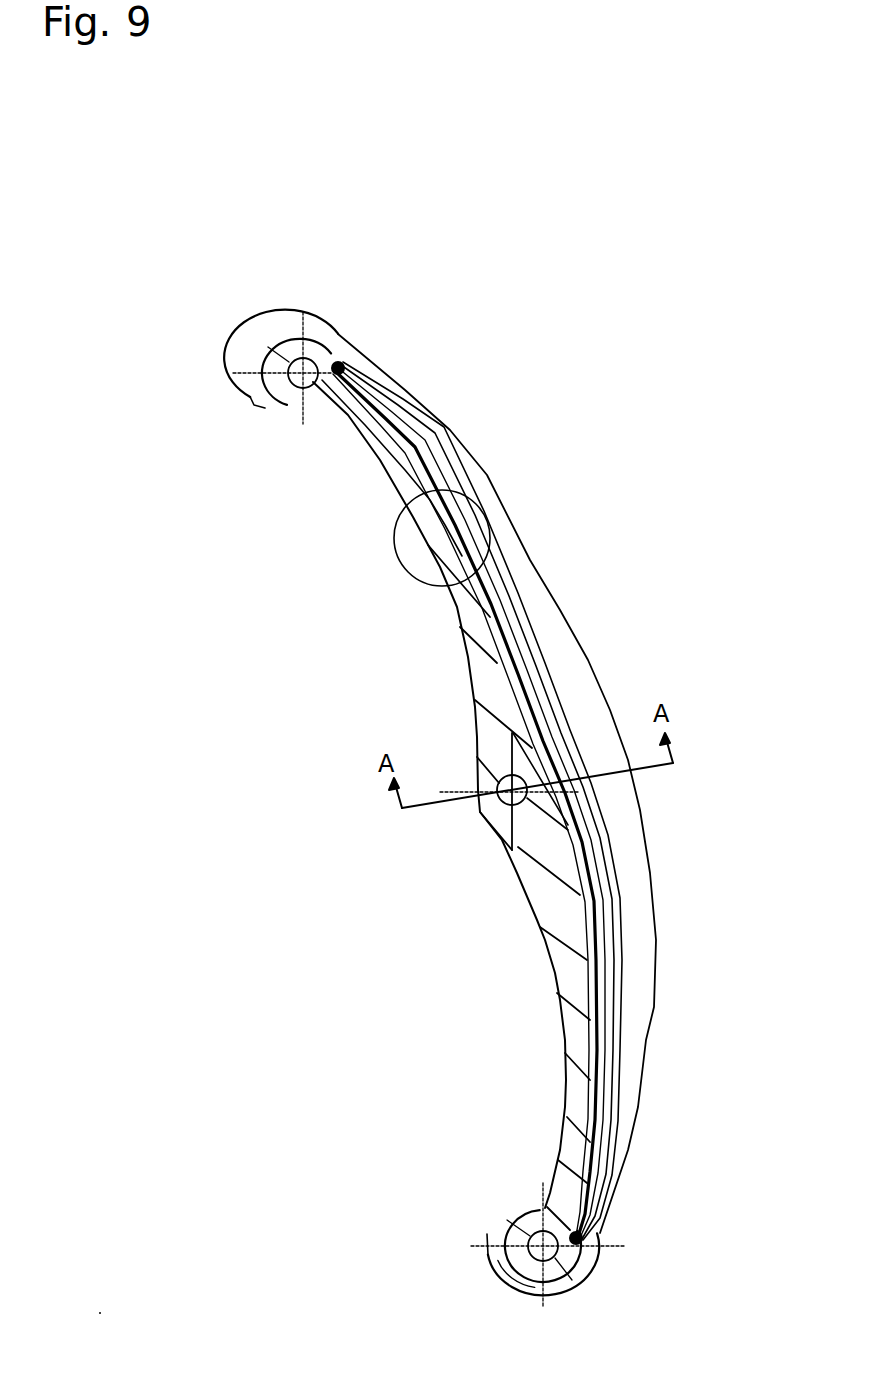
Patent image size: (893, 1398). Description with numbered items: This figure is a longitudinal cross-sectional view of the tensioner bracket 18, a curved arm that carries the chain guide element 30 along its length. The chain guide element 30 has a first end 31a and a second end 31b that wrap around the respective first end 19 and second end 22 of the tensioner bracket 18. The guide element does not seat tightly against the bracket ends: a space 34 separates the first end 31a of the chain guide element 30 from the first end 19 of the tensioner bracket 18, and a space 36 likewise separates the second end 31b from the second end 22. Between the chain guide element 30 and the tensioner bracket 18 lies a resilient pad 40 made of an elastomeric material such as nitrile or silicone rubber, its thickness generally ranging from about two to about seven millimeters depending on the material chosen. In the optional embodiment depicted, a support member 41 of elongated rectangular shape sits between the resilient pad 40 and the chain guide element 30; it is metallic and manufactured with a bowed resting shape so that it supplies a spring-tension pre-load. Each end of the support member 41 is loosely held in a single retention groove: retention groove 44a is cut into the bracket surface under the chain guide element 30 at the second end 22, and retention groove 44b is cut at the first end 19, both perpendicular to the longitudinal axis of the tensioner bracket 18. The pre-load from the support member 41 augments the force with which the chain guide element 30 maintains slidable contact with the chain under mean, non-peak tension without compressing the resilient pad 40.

The tensioner bracket 18 is at (588, 663).
The first end 19 is at (527, 1227).
The second end 22 is at (307, 389).
The chain guide element 30 is at (272, 340).
The first end of chain guide element 31a is at (490, 1238).
The second end of chain guide element 31b is at (255, 404).
The space 34 is at (500, 1220).
The space 36 is at (268, 395).
The resilient pad 40 is at (517, 663).
The support member 41 is at (473, 578).
The retention groove 44a is at (345, 368).
The retention groove 44b is at (582, 1238).